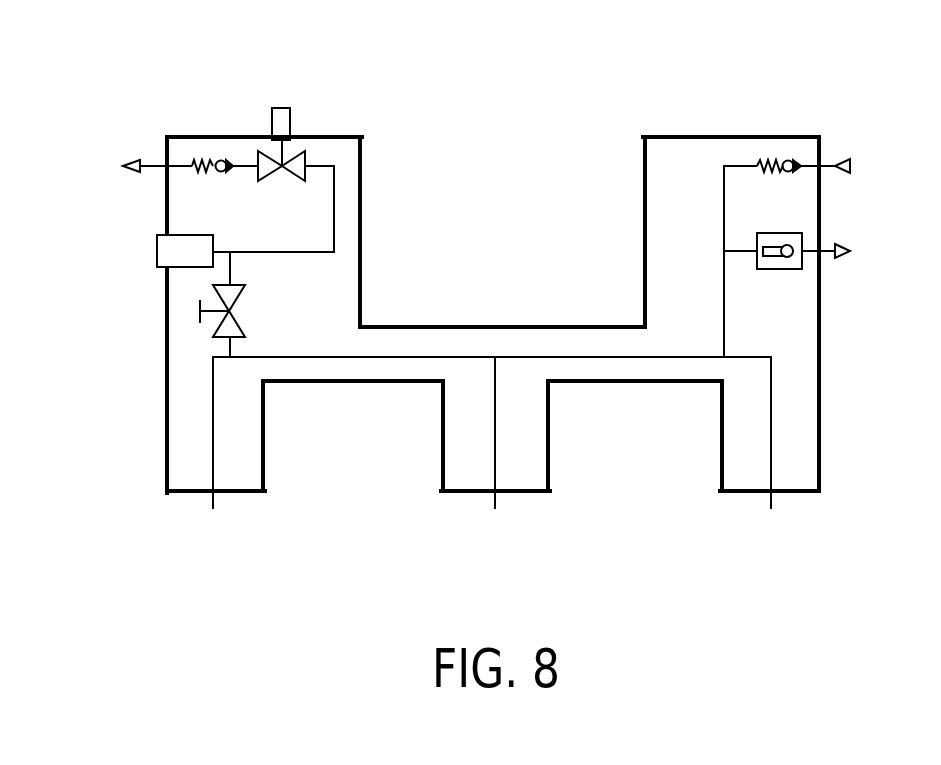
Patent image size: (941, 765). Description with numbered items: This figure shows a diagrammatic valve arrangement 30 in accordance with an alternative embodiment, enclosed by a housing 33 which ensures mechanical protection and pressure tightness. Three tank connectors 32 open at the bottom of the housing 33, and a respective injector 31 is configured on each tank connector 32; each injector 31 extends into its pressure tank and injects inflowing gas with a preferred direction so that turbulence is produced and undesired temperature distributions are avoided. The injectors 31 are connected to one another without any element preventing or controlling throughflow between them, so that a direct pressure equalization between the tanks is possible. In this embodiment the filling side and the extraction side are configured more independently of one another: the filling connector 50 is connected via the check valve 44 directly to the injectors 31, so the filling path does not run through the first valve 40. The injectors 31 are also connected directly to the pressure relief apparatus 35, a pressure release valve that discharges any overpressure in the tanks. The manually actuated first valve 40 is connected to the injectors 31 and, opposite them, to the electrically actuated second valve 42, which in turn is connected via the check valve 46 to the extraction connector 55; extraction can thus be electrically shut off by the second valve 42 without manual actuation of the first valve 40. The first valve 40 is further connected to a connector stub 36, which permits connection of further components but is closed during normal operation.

The valve arrangement 30 is at (180, 366).
The injector 31 is at (210, 512).
The tank connector 32 is at (247, 433).
The housing 33 is at (532, 326).
The pressure relief apparatus 35 is at (795, 262).
The connector stub 36 is at (150, 245).
The first valve 40 is at (240, 326).
The second valve 42 is at (300, 162).
The check valve 44 is at (783, 162).
The check valve 46 is at (222, 160).
The filling connector 50 is at (822, 166).
The extraction connector 55 is at (166, 163).